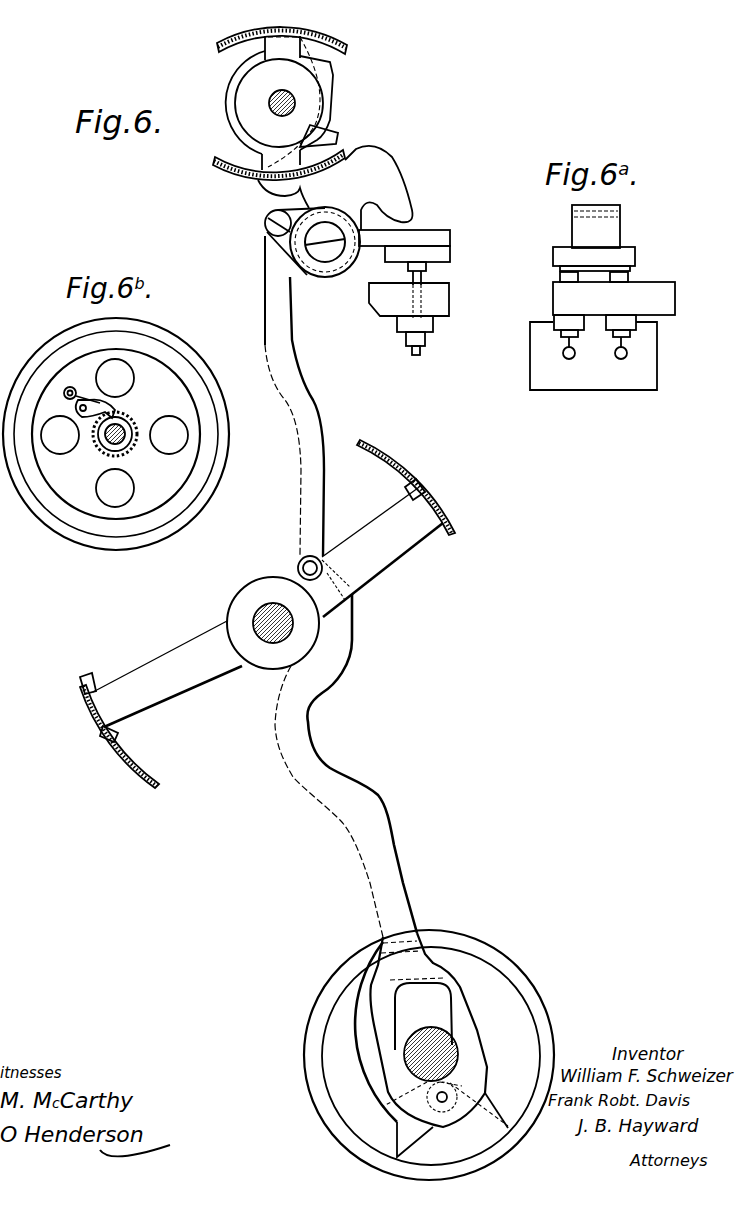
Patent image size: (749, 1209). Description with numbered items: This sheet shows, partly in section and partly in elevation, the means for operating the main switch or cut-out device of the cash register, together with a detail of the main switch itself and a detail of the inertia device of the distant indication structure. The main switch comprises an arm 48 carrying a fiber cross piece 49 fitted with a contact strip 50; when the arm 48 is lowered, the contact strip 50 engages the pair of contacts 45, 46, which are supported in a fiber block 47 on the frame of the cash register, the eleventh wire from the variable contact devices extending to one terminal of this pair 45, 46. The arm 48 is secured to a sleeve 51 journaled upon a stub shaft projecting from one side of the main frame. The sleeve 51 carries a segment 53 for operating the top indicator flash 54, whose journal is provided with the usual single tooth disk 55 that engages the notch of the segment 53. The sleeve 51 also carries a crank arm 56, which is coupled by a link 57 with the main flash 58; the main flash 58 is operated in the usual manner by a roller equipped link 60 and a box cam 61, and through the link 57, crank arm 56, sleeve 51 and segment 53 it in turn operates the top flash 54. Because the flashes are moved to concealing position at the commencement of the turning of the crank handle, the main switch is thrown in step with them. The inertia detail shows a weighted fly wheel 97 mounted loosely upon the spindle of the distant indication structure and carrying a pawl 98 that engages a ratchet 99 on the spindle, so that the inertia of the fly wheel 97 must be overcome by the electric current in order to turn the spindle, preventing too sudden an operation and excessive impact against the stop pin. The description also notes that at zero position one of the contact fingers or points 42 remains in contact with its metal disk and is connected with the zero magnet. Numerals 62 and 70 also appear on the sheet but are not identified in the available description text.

In FIG. 6, the contact fingers or points 42 is at (271, 643).
In FIG. 6, the contact 45 is at (430, 332).
In FIG. 6A, the contact 45 is at (562, 345).
In FIG. 6A, the contact 46 is at (630, 345).
In FIG. 6, the fiber block 47 is at (450, 303).
In FIG. 6A, the fiber block 47 is at (614, 298).
In FIG. 6, the arm 48 is at (416, 230).
In FIG. 6A, the arm 48 is at (610, 240).
In FIG. 6, the fiber cross piece 49 is at (440, 256).
In FIG. 6A, the fiber cross piece 49 is at (627, 254).
In FIG. 6, the contact strip 50 is at (430, 268).
In FIG. 6A, the contact strip 50 is at (560, 270).
In FIG. 6, the sleeve 51 is at (327, 266).
In FIG. 6, the segment 53 is at (335, 188).
In FIG. 6, the top indicator flash 54 is at (330, 42).
In FIG. 6, the single tooth disk 55 is at (338, 135).
In FIG. 6, the crank arm 56 is at (275, 236).
In FIG. 6, the link 57 is at (312, 422).
In FIG. 6, the main flash 58 is at (375, 566).
In FIG. 6, the roller equipped link 60 is at (395, 840).
In FIG. 6, the box cam 61 is at (505, 993).
In FIG. 6A, the base plate 62 is at (657, 358).
In FIG. 6B, the shaft 70 is at (122, 445).
In FIG. 6B, the weighted fly wheel 97 is at (190, 350).
In FIG. 6B, the pawl 98 is at (112, 403).
In FIG. 6B, the ratchet 99 is at (103, 453).